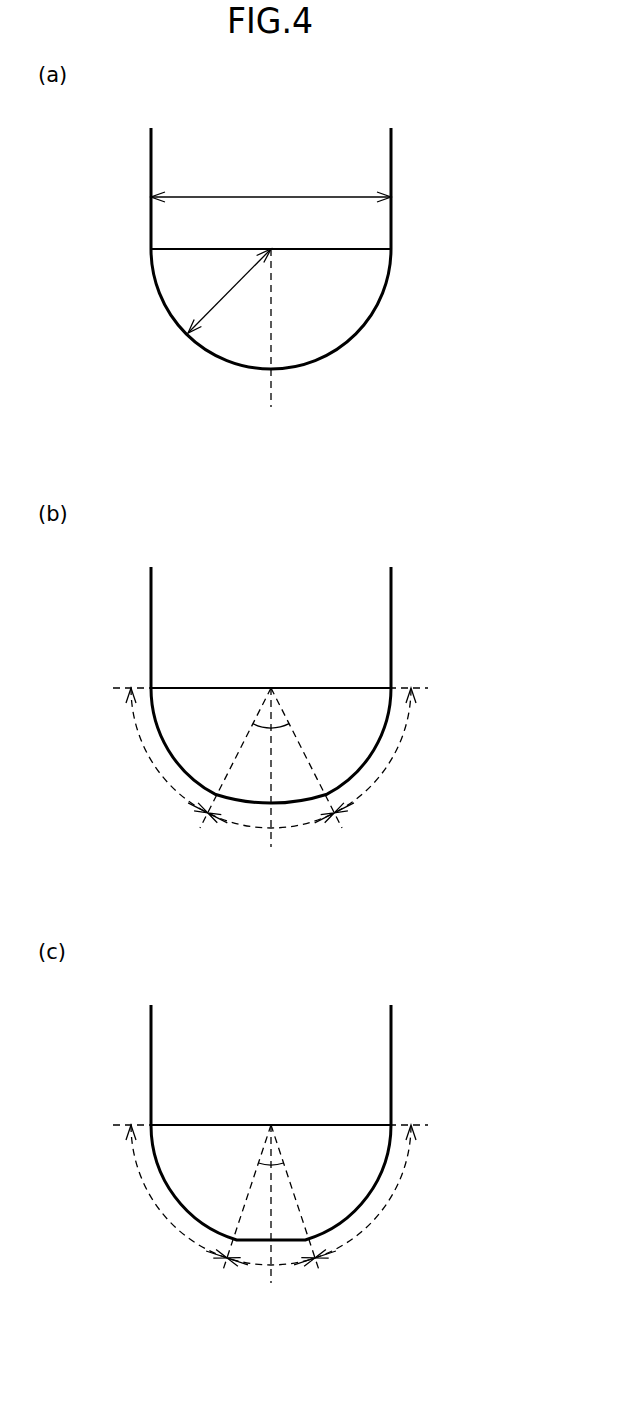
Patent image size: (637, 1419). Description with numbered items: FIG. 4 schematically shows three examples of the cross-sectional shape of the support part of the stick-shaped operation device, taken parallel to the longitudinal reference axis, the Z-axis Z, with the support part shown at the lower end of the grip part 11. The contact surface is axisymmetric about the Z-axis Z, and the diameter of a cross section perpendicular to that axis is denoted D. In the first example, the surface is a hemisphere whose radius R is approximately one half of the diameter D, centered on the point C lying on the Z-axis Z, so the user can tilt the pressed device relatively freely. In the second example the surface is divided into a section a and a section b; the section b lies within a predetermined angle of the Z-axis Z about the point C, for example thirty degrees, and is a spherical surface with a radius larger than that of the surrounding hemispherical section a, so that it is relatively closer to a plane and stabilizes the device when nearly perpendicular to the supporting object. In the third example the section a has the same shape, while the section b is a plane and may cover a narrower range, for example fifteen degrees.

The grip part 11 is at (383, 290).
The point C is at (270, 672).
The diameter D is at (271, 184).
The radius R is at (229, 291).
The Z-axis Z is at (271, 783).
The section a is at (271, 976).
The section b is at (271, 1052).